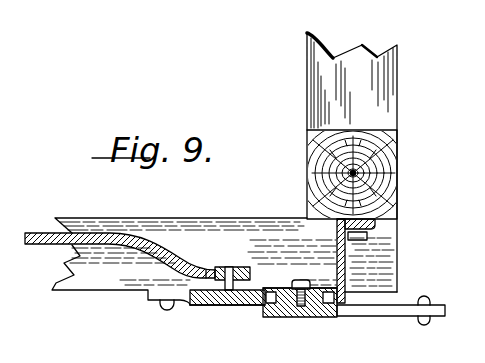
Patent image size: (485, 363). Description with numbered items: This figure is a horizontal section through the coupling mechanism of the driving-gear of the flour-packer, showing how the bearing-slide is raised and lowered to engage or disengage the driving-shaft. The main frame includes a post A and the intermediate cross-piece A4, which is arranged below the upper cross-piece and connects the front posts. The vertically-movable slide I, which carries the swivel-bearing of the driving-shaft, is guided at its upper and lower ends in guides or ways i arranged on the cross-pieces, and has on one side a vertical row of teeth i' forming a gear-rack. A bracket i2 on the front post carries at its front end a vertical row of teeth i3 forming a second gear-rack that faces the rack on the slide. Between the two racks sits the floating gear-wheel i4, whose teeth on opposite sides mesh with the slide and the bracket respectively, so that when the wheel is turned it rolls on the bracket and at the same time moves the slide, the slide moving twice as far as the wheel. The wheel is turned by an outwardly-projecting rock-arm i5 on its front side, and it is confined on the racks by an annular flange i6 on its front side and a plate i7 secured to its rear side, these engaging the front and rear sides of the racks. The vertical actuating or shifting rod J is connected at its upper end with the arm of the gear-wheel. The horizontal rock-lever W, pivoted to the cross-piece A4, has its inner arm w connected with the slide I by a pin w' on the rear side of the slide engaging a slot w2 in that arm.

The post A is at (397, 172).
The intermediate cross-piece A4 is at (56, 283).
The horizontal rock-lever W is at (56, 220).
The inner arm w is at (185, 256).
The slot w2 is at (207, 267).
The pin w' is at (228, 262).
The vertically-movable slide I is at (202, 300).
The guides or ways i is at (227, 323).
The vertical row of teeth i' is at (285, 316).
The bracket i2 is at (337, 240).
The vertical row of teeth i3 is at (353, 291).
The floating gear-wheel i4 is at (297, 304).
The rock-arm i5 is at (377, 311).
The annular flange i6 is at (270, 303).
The plate i7 is at (271, 288).
The vertical actuating or shifting rod J is at (424, 325).